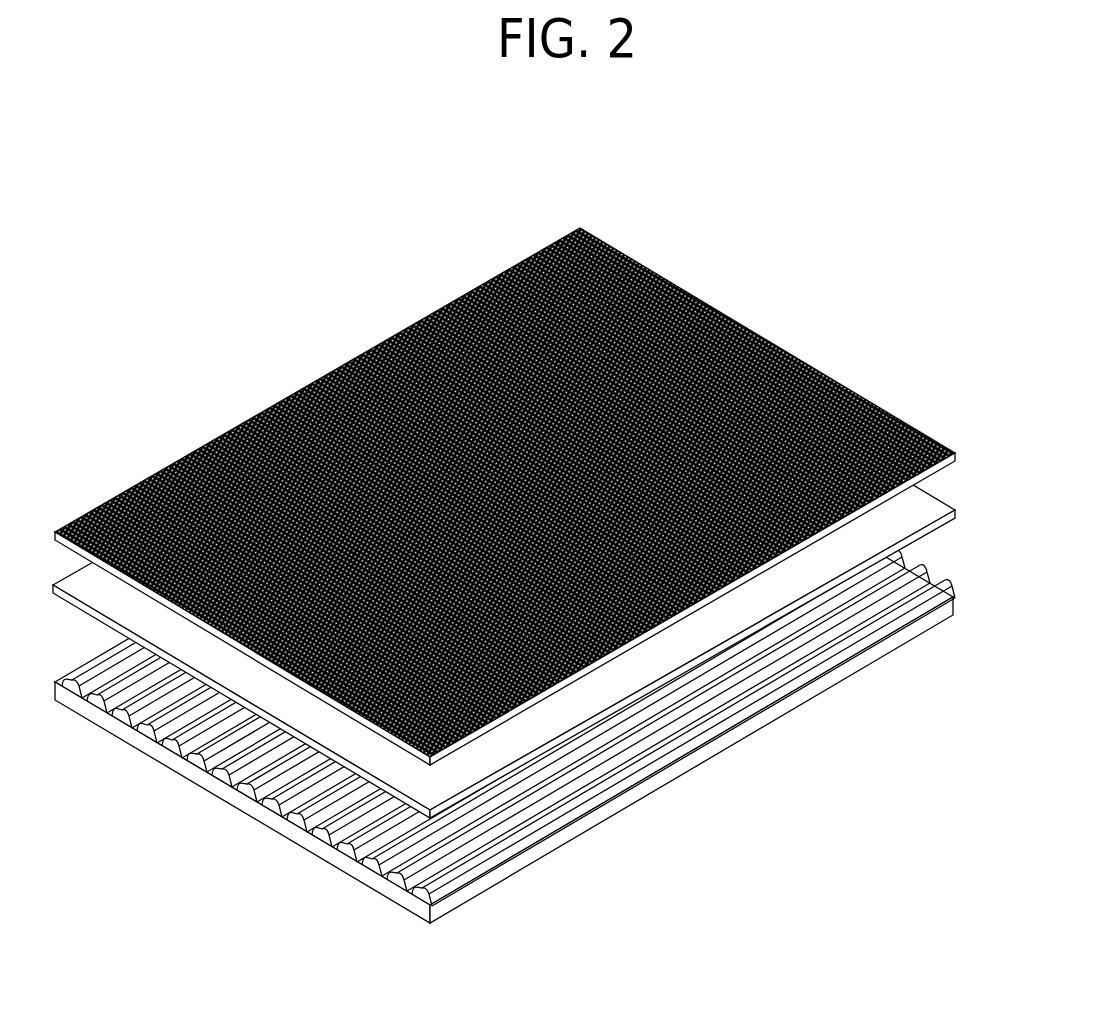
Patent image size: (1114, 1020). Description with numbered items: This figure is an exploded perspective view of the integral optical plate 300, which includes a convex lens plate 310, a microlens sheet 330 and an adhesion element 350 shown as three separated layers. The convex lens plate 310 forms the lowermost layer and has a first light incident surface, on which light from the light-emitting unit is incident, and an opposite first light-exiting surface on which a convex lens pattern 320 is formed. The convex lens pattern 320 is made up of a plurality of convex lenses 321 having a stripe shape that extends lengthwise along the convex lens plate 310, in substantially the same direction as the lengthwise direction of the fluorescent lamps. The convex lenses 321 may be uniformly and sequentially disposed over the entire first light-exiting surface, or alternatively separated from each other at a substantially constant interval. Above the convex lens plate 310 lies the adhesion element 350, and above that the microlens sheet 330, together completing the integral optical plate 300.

The integral optical plate 300 is at (824, 222).
The convex lens plate 310 is at (980, 587).
The convex lens pattern 320 is at (797, 683).
The convex lens 321 is at (373, 862).
The microlens sheet 330 is at (978, 442).
The adhesion element 350 is at (980, 502).